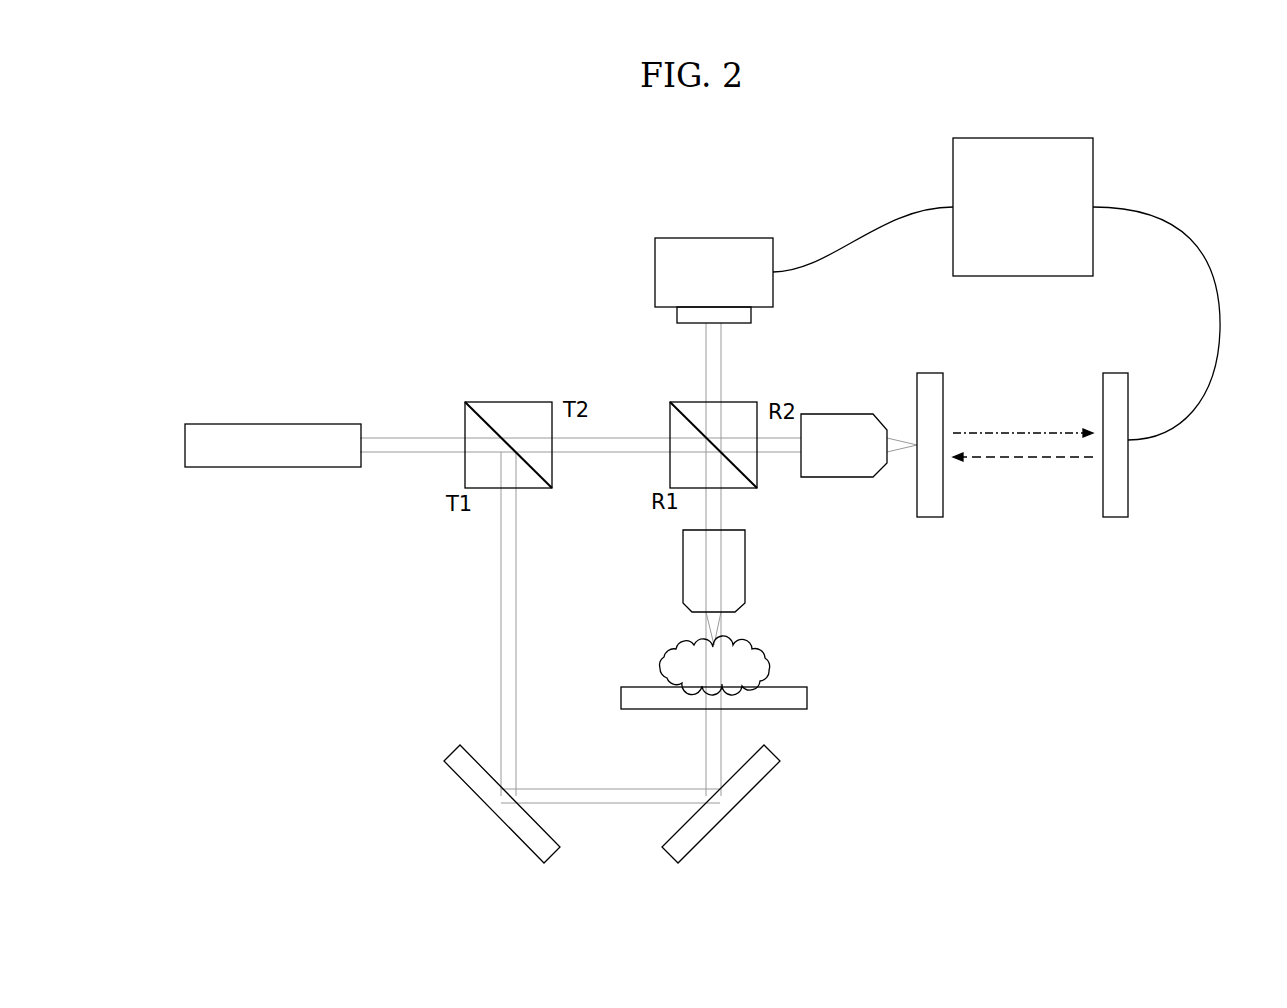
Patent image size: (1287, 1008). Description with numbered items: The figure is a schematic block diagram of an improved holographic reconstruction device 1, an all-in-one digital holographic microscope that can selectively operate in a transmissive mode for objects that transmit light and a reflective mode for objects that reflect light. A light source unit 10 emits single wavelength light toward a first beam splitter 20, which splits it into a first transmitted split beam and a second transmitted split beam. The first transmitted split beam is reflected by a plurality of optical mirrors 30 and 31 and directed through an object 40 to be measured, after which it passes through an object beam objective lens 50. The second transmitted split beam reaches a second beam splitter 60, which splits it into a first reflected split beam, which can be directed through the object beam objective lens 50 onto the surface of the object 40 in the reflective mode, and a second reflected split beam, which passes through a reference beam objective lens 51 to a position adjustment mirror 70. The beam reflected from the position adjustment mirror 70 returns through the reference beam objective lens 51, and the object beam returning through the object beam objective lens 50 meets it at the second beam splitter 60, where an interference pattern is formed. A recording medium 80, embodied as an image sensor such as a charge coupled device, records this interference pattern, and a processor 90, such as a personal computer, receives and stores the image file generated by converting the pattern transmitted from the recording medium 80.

The improved holographic reconstruction device 1 is at (479, 246).
The light source unit 10 is at (272, 424).
The first beam splitter 20 is at (512, 401).
The optical mirror 30 is at (491, 812).
The optical mirror 31 is at (728, 812).
The object to be measured 40 is at (769, 665).
The object beam objective lens 50 is at (745, 568).
The reference beam objective lens 51 is at (838, 413).
The second beam splitter 60 is at (740, 401).
The position adjustment mirror 70 is at (1103, 393).
The recording medium 80 is at (716, 237).
The processor 90 is at (1025, 137).